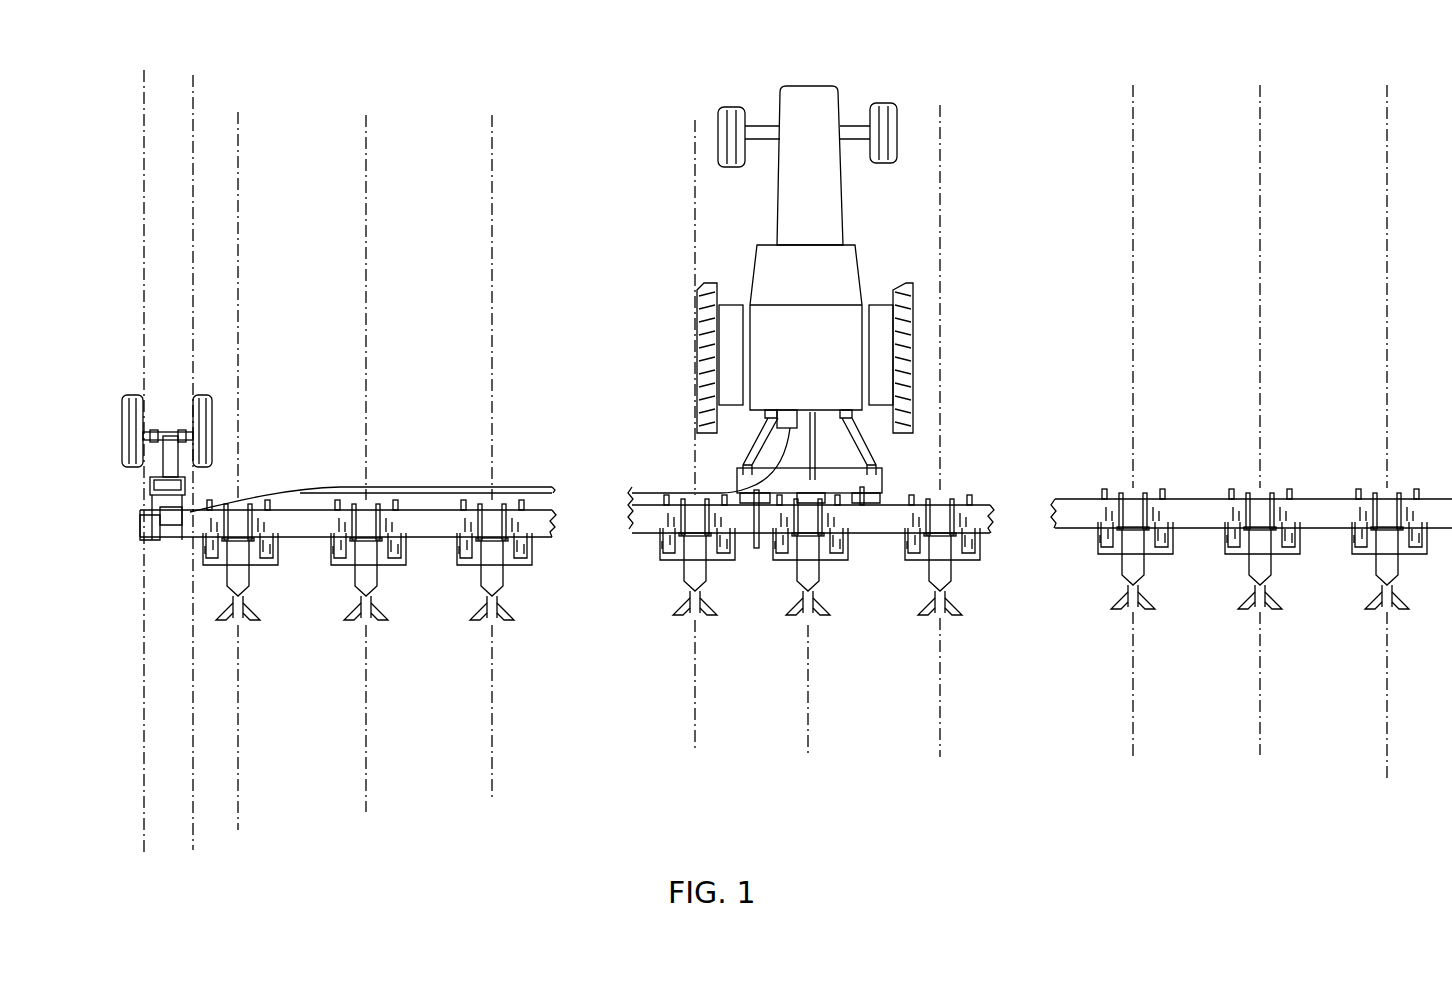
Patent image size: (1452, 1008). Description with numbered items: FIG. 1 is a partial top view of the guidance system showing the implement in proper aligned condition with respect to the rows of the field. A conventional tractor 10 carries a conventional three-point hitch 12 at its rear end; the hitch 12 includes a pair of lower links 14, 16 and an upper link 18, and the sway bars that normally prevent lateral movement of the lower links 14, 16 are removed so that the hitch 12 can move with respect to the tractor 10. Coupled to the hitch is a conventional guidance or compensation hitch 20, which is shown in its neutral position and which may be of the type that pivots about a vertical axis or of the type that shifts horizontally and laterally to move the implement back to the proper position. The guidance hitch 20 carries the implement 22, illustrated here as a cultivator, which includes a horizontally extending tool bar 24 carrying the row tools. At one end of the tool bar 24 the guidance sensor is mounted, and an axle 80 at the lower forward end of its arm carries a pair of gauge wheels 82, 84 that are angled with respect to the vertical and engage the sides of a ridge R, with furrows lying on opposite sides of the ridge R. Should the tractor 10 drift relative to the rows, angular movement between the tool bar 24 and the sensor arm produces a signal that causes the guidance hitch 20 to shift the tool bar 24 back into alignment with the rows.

The tractor 10 is at (918, 311).
The 3-point hitch 12 is at (872, 444).
The lower link 14 is at (746, 456).
The lower link 16 is at (873, 460).
The upper link 18 is at (815, 468).
The guidance hitch 20 is at (862, 486).
The implement 22 is at (756, 537).
The tool bar 24 is at (542, 521).
The axle 80 is at (172, 431).
The gauge wheel 82 is at (208, 397).
The gauge wheel 84 is at (124, 397).
The ridge R is at (176, 647).